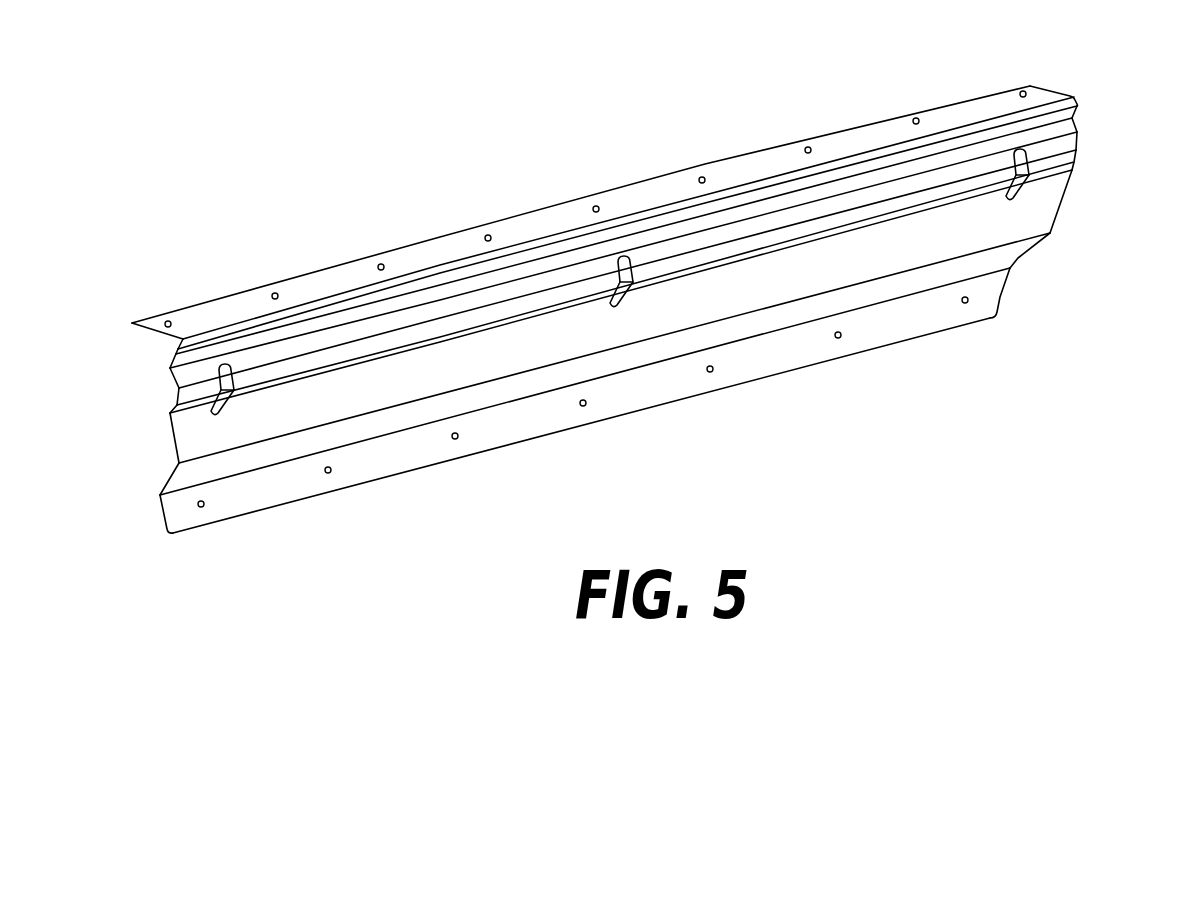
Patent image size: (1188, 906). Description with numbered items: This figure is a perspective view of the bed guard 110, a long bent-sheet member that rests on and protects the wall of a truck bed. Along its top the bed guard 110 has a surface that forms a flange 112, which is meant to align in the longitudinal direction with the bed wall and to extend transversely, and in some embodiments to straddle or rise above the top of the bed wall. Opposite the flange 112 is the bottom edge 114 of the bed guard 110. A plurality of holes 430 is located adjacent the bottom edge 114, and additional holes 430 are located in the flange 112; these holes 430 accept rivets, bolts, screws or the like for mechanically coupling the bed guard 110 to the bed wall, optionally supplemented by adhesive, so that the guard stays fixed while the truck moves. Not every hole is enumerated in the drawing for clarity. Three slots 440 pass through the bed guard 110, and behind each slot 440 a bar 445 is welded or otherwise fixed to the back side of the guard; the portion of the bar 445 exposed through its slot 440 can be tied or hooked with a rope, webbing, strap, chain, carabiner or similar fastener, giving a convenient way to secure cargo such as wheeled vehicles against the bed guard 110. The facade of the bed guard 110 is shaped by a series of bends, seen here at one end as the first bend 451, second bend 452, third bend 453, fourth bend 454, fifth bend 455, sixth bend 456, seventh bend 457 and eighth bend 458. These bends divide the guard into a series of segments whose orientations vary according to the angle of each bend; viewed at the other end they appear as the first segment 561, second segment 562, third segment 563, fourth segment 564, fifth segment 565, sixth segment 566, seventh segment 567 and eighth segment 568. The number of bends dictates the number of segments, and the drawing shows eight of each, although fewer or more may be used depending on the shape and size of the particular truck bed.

The bed guard 110 is at (220, 83).
The flange 112 is at (440, 249).
The bottom edge 114 is at (390, 481).
The holes 430 is at (916, 118).
The slots 440 is at (224, 364).
The bar 445 is at (234, 390).
The first bend 451 is at (153, 328).
The second bend 452 is at (170, 352).
The third bend 453 is at (170, 373).
The fourth bend 454 is at (180, 387).
The fifth bend 455 is at (172, 412).
The sixth bend 456 is at (177, 423).
The seventh bend 457 is at (180, 465).
The eighth bend 458 is at (160, 497).
The first segment 561 is at (1080, 104).
The second segment 562 is at (1077, 112).
The third segment 563 is at (1075, 136).
The fourth segment 564 is at (1077, 158).
The fifth segment 565 is at (1074, 173).
The sixth segment 566 is at (1058, 215).
The seventh segment 567 is at (1008, 256).
The eighth segment 568 is at (993, 297).